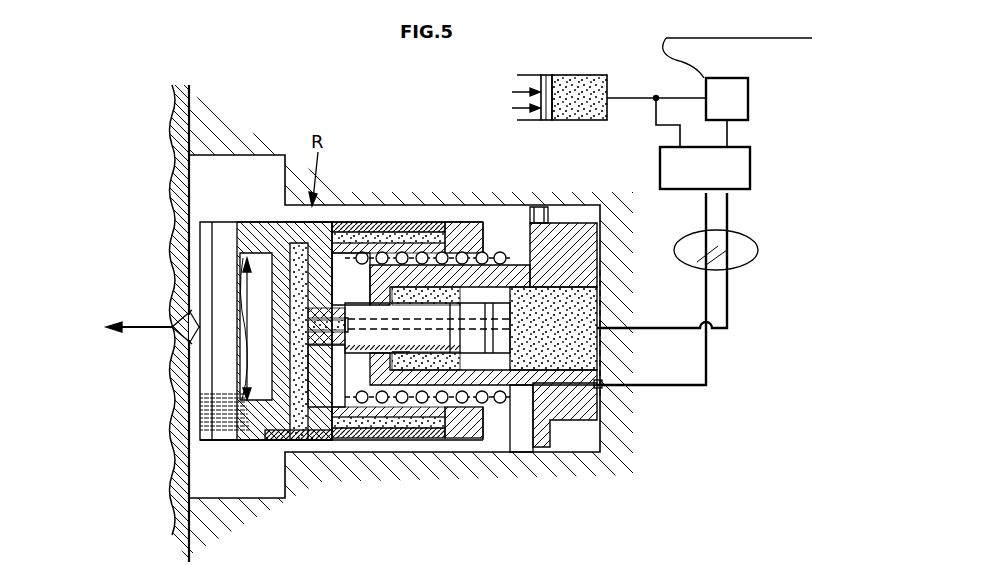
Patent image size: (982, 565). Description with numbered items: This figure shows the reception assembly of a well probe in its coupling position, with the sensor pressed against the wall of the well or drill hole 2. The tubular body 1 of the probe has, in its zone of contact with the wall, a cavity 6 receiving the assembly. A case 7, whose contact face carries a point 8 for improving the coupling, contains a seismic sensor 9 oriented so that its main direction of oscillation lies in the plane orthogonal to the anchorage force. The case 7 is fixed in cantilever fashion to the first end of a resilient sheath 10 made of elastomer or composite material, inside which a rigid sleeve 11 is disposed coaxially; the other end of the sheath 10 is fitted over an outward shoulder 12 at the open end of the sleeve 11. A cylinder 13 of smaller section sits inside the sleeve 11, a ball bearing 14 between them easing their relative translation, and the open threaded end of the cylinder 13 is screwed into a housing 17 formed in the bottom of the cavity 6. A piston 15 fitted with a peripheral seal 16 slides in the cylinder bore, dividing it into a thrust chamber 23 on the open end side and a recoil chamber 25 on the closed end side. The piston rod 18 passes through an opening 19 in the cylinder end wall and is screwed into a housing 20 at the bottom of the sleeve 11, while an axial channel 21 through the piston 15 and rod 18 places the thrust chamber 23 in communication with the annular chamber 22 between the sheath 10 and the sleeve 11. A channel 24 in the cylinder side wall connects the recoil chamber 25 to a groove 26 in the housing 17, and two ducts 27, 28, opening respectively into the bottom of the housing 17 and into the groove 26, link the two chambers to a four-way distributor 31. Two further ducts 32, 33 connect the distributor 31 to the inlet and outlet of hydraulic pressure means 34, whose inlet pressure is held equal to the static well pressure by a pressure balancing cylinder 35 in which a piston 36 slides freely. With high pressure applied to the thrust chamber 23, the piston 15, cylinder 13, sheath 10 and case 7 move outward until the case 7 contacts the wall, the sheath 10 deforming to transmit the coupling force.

The tubular body 1 is at (210, 98).
The well or drill hole 2 is at (188, 90).
The cavity 6 is at (266, 305).
The case 7 is at (243, 440).
The point 8 is at (172, 327).
The seismic sensor 9 is at (262, 252).
The sheath 10 is at (355, 222).
The rigid sleeve 11 is at (428, 248).
The shoulder 12 is at (463, 240).
The cylinder 13 is at (565, 275).
The ball bearing 14 is at (500, 253).
The piston 15 is at (474, 353).
The seal 16 is at (500, 403).
The housing 17 is at (545, 233).
The rod 18 is at (428, 335).
The opening 19 is at (365, 301).
The housing 20 is at (321, 350).
The axial channel 21 is at (350, 323).
The annular chamber 22 is at (392, 237).
The thrust chamber 23 is at (578, 300).
The channel 24 is at (565, 390).
The recoil chamber 25 is at (400, 357).
The groove 26 is at (603, 388).
The channel (duct) 27 is at (735, 242).
The channel (duct) 28 is at (700, 238).
The four-way distributor 31 is at (750, 170).
The duct 32 is at (656, 126).
The duct 33 is at (727, 134).
The hydraulic pressure means 34 is at (748, 100).
The pressure balancing cylinder 35 is at (590, 75).
The piston 36 is at (545, 75).